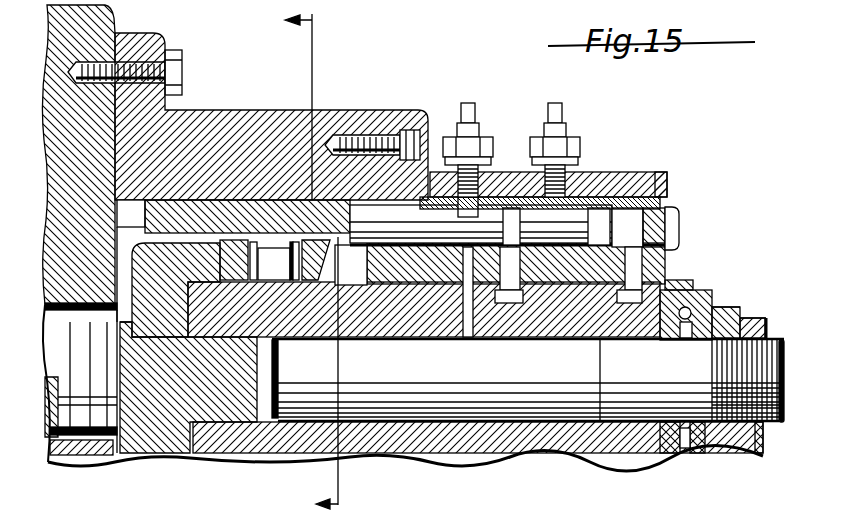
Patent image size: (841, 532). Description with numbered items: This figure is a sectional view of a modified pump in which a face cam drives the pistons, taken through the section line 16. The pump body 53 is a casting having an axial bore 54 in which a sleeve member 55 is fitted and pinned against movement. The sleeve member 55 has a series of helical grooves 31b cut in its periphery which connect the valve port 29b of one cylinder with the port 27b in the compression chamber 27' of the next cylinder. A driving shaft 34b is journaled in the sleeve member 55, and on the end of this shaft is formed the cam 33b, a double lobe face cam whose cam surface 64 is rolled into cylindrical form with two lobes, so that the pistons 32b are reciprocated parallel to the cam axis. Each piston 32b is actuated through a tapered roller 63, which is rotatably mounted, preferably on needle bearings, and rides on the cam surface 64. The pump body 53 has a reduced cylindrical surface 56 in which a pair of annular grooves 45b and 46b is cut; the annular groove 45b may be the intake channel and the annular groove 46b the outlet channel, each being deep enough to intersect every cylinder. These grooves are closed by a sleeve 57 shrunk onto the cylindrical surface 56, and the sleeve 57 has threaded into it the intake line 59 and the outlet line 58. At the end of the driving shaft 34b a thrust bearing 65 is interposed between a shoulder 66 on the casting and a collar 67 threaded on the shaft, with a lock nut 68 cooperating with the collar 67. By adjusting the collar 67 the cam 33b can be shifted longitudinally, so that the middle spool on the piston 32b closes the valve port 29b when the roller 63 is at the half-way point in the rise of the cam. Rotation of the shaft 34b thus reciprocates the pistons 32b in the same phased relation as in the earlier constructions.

The section line 16 is at (300, 261).
The pump body 53 is at (220, 128).
The piston 32b is at (378, 218).
The outlet line 58 is at (470, 103).
The annular groove 46b is at (504, 172).
The intake line 59 is at (549, 122).
The sleeve 57 is at (662, 173).
The annular groove 45b is at (584, 173).
The reduced cylindrical surface 56 is at (596, 197).
The compression chamber 27' is at (700, 207).
The port 27b is at (622, 225).
The axial bore 54 is at (635, 268).
The sleeve member 55 is at (698, 284).
The thrust bearing 65 is at (716, 312).
The collar 67 is at (737, 320).
The lock nut 68 is at (742, 332).
The tapered roller 63 is at (318, 248).
The cam surface 64 is at (233, 263).
The helical groove 31b is at (526, 272).
The valve port 29b is at (548, 290).
The shoulder 66 is at (660, 318).
The cam 33b is at (150, 455).
The driving shaft 34b is at (633, 400).